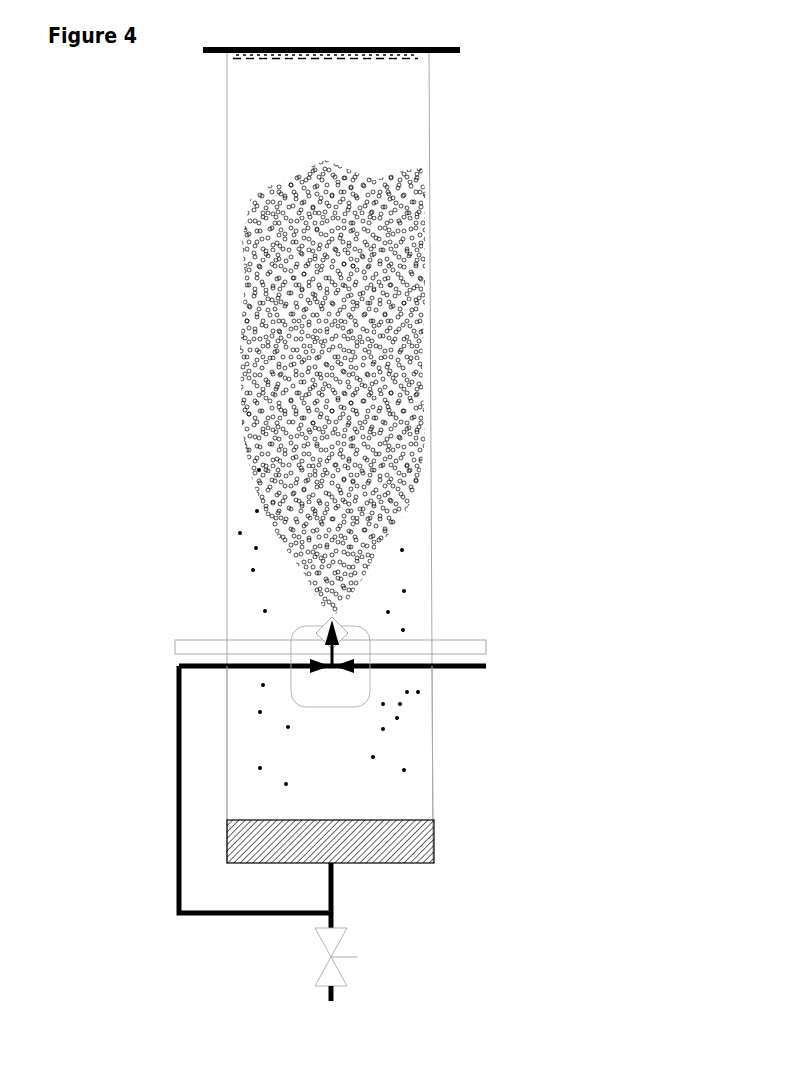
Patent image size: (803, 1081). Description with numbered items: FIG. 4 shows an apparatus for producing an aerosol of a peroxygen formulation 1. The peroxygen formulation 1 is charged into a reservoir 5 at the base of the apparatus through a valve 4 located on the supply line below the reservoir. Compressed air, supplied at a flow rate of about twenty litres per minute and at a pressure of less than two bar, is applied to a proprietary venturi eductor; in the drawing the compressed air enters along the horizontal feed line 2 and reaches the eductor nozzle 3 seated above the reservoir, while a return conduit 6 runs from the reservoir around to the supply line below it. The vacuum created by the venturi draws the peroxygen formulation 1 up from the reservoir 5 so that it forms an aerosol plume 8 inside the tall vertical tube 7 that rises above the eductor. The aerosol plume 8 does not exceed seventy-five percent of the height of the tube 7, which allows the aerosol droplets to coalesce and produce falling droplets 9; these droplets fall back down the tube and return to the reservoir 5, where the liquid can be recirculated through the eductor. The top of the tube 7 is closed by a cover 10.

The peroxygen formulation 1 is at (366, 841).
The gas feed line 2 is at (494, 667).
The nozzle 3 is at (372, 630).
The valve 4 is at (364, 960).
The reservoir 5 is at (243, 777).
The recirculation conduit 6 is at (174, 684).
The tube 7 is at (226, 433).
The aerosol plume 8 is at (393, 435).
The falling droplets 9 is at (405, 718).
The top cover 10 is at (350, 59).